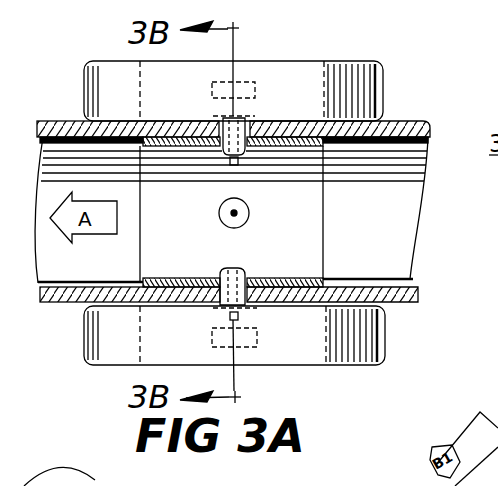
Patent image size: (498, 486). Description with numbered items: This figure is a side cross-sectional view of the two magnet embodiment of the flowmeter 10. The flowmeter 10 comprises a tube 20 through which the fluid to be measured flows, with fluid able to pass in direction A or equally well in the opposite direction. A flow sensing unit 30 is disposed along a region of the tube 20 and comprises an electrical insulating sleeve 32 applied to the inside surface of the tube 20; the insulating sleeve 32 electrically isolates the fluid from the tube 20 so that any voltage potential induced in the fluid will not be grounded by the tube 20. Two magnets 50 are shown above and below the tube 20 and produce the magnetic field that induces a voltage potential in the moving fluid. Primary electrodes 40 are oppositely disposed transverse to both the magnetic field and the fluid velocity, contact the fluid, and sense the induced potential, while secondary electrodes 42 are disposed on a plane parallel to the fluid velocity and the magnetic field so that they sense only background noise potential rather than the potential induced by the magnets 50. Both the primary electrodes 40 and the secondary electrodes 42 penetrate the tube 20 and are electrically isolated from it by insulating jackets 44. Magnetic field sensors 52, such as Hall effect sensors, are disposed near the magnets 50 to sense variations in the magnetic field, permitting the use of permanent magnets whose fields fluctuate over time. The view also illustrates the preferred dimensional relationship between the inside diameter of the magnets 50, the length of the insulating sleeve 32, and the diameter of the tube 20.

The flowmeter 10 is at (318, 38).
The tube 20 is at (394, 239).
The flow sensing unit 30 is at (57, 331).
The electrical insulating sleeve 32 is at (312, 158).
The primary electrodes 40 is at (222, 220).
The secondary electrodes 42 is at (236, 160).
The insulating jackets 44 is at (214, 122).
The magnets 50 is at (365, 58).
The magnetic field sensors 52 is at (246, 73).